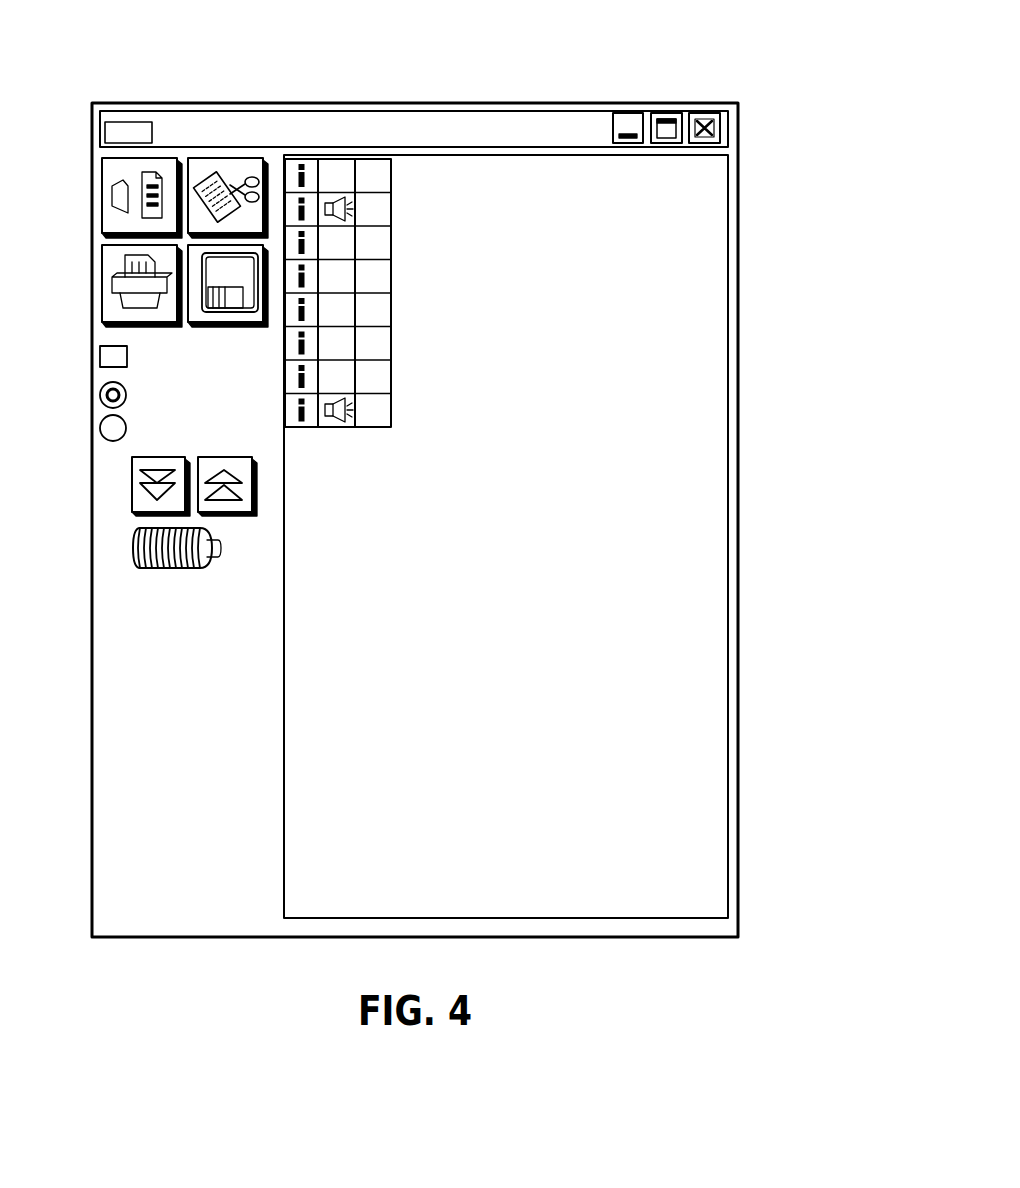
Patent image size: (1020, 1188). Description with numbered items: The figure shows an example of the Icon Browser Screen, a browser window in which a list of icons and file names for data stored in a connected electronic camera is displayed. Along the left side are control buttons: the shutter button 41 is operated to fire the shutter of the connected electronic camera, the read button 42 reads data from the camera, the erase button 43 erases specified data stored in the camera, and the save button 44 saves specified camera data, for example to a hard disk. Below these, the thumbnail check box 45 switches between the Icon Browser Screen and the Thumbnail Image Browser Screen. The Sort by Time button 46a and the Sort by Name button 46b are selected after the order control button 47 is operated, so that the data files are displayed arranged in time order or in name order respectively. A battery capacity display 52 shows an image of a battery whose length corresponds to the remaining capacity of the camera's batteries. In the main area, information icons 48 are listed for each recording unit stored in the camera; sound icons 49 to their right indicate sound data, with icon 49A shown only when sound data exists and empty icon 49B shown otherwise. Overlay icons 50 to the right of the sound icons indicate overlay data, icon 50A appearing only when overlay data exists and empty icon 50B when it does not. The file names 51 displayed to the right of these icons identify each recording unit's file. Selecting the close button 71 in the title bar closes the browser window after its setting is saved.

The shutter button 41 is at (112, 172).
The read button 42 is at (222, 165).
The erase button 43 is at (112, 265).
The save button 44 is at (195, 297).
The thumbnail check box 45 is at (100, 358).
The Sort by Time button 46a is at (100, 395).
The Sort by Name button 46b is at (100, 428).
The order control button 47 is at (132, 483).
The information icons 48 is at (313, 167).
The sound icons 49 is at (455, 275).
The sound icon 49A is at (335, 428).
The empty sound icon 49B is at (335, 377).
The overlay icons 50 is at (474, 236).
The overlay icon 50A is at (372, 335).
The empty overlay icon 50B is at (372, 302).
The file names 51 is at (541, 175).
The battery capacity display 52 is at (133, 548).
The close button 71 is at (752, 122).